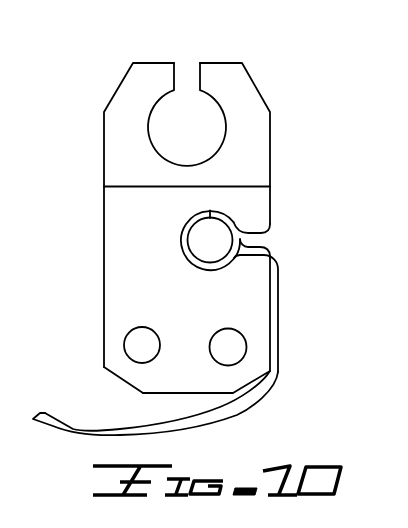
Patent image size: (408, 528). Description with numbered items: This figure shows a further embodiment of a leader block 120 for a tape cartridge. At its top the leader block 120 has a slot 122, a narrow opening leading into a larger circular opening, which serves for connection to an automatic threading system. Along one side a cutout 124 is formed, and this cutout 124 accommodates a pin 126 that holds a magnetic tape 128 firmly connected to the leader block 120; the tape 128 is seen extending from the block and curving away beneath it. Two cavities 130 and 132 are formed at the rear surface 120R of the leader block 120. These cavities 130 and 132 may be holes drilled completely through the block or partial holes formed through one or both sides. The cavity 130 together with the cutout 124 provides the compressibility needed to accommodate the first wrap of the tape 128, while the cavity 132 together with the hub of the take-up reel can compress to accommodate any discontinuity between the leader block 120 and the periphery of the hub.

The leader block 120 is at (160, 228).
The rear surface 120R is at (163, 394).
The slot 122 is at (184, 99).
The cutout 124 is at (259, 236).
The pin 126 is at (204, 247).
The magnetic tape 128 is at (78, 433).
The cavity 130 is at (240, 351).
The cavity 132 is at (131, 345).